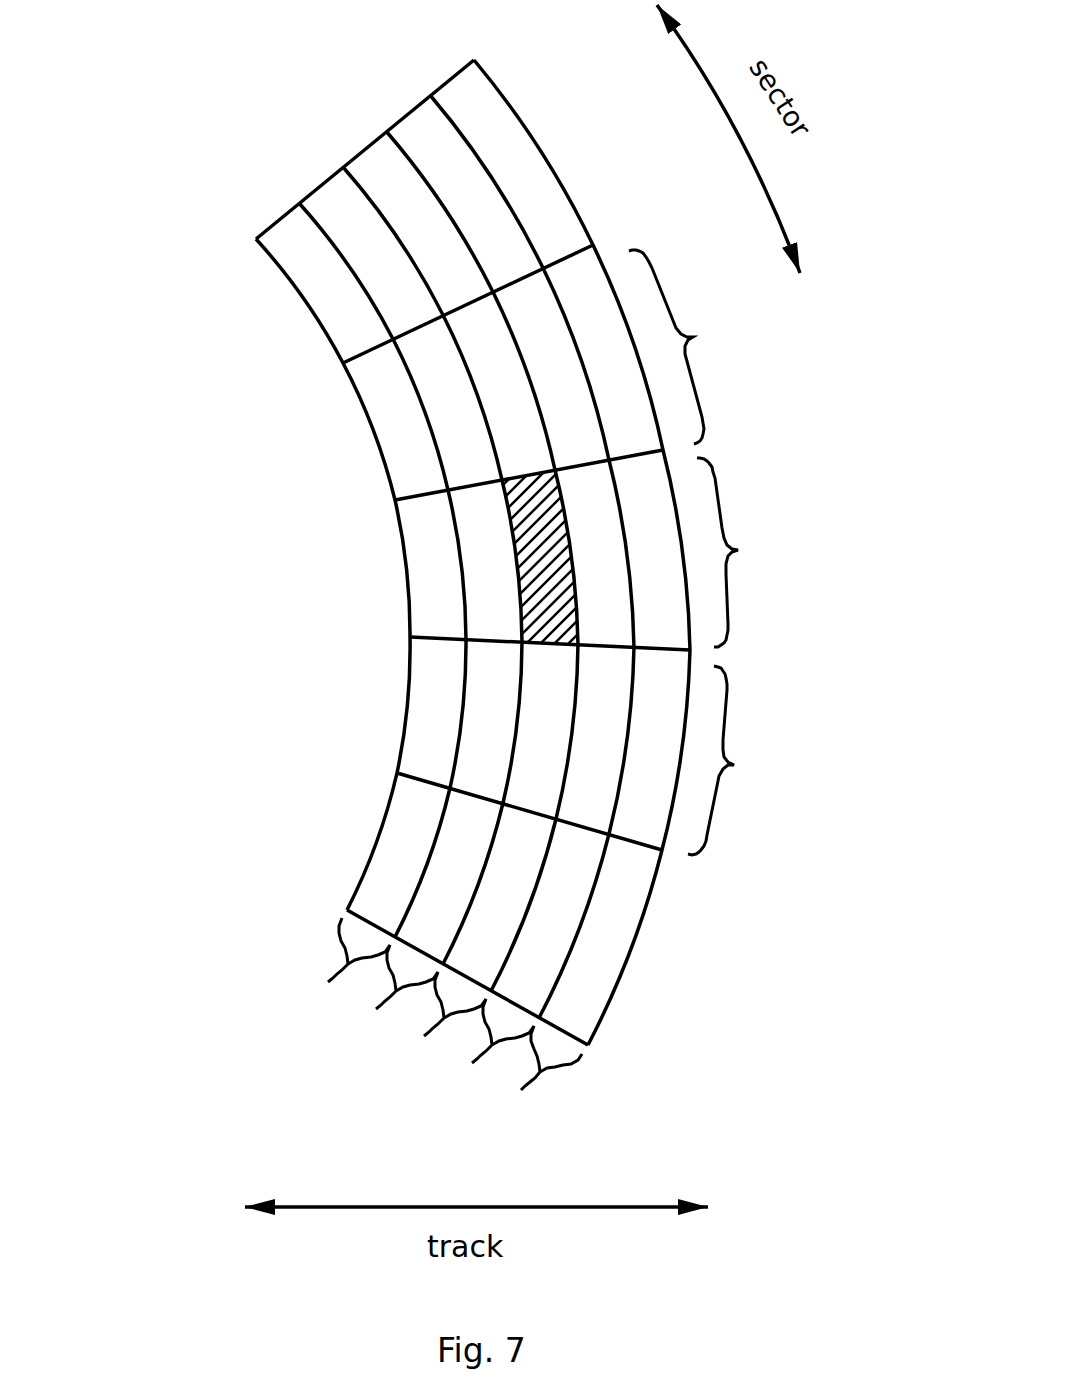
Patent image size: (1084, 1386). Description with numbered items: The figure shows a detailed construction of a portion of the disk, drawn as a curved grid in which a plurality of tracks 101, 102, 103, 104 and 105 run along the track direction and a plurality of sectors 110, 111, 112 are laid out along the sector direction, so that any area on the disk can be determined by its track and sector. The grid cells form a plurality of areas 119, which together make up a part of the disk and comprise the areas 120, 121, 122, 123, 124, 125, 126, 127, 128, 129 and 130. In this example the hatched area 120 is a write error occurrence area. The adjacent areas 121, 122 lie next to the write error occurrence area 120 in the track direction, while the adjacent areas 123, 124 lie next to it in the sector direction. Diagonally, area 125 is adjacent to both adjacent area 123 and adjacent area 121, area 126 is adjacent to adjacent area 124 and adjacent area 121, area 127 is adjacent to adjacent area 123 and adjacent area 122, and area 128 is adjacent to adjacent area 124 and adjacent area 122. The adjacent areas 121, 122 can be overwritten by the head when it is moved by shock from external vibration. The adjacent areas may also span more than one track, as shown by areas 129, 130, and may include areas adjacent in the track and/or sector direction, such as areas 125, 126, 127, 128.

The plurality of areas 119 is at (300, 173).
The sector 110 is at (691, 347).
The sector 111 is at (748, 552).
The sector 112 is at (749, 760).
The track 101 is at (437, 1026).
The track 102 is at (480, 1061).
The track 103 is at (383, 998).
The track 104 is at (541, 1080).
The track 105 is at (332, 970).
The write error occurrence area 120 is at (547, 602).
The adjacent area 121 is at (615, 598).
The adjacent area 122 is at (495, 572).
The adjacent area 123 is at (517, 460).
The adjacent area 124 is at (530, 742).
The area 125 is at (572, 432).
The area 126 is at (605, 698).
The area 127 is at (445, 431).
The area 128 is at (493, 707).
The area 129 is at (423, 543).
The area 130 is at (653, 502).